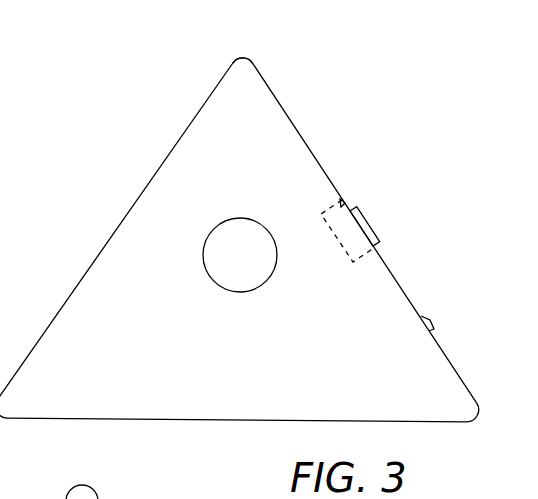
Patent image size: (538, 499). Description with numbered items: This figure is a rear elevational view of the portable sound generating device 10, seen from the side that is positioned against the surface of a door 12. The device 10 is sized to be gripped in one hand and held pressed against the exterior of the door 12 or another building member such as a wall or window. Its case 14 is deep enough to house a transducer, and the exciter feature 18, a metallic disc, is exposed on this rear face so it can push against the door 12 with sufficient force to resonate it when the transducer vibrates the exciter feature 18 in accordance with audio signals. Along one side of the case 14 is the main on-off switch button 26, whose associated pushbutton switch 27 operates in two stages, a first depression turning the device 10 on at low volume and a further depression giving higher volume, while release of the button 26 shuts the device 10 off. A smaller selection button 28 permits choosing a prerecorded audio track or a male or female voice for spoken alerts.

The portable sound generating device 10 is at (297, 102).
The door 12 is at (4, 220).
The case 14 is at (249, 73).
The exciter feature 18 is at (217, 222).
The main on-off switch button 26 is at (365, 221).
The pushbutton switch 27 is at (342, 197).
The selection button 28 is at (432, 316).